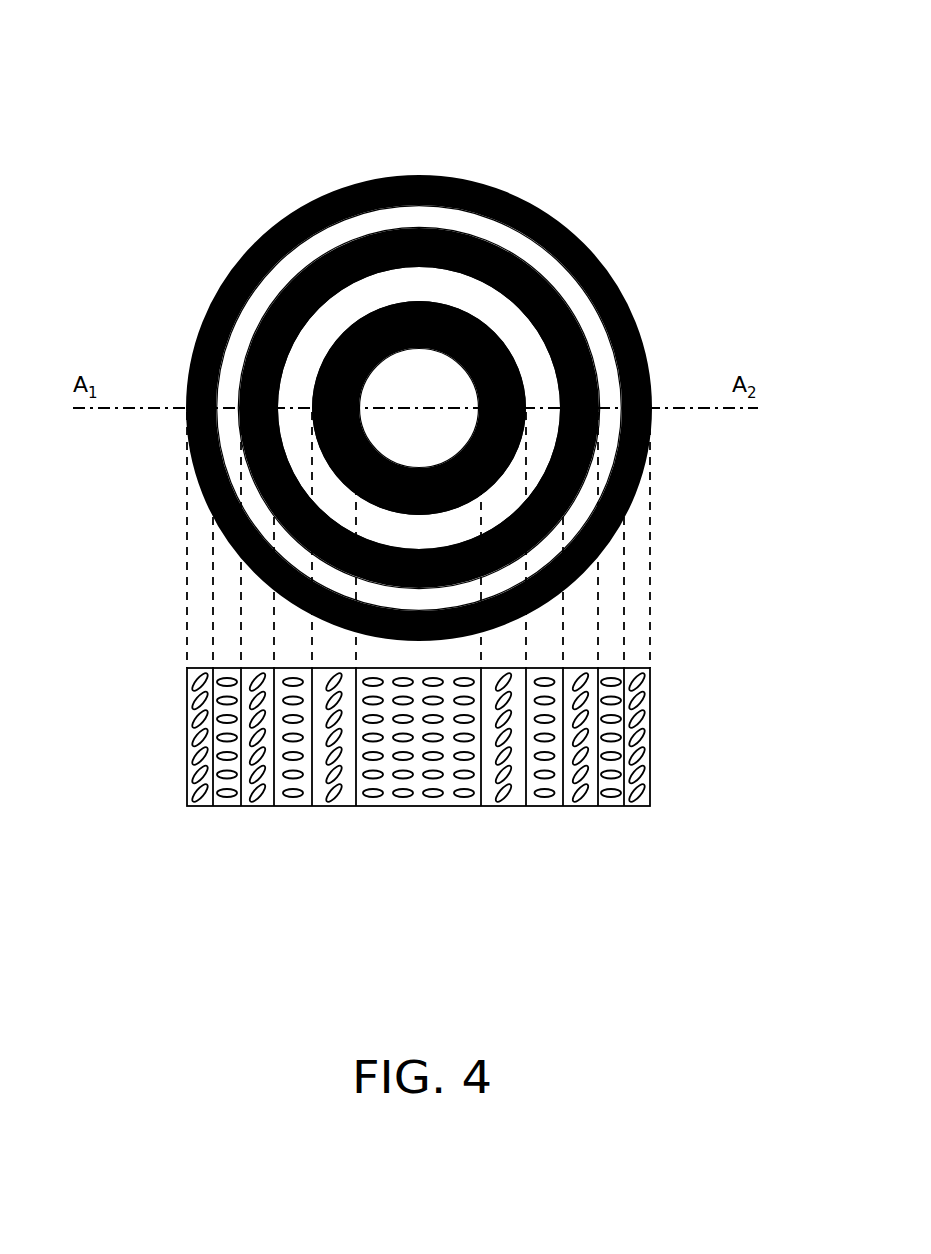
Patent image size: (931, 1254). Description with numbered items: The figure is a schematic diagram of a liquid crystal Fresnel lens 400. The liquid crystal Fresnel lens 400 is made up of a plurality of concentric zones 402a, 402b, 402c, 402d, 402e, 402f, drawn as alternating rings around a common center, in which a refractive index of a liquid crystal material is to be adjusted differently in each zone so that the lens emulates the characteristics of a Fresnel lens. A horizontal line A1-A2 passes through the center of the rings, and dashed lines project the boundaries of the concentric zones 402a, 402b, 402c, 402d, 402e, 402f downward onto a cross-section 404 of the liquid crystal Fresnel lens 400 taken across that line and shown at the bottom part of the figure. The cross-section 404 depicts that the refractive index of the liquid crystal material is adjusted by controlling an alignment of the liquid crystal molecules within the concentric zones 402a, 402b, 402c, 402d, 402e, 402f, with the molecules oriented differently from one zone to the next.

The liquid crystal Fresnel lens 400 is at (437, 317).
The concentric zone 402a is at (278, 297).
The concentric zone 402b is at (312, 278).
The concentric zone 402c is at (389, 286).
The concentric zone 402d is at (419, 290).
The concentric zone 402e is at (419, 309).
The concentric zone 402f is at (419, 334).
The cross-section 404 is at (487, 722).